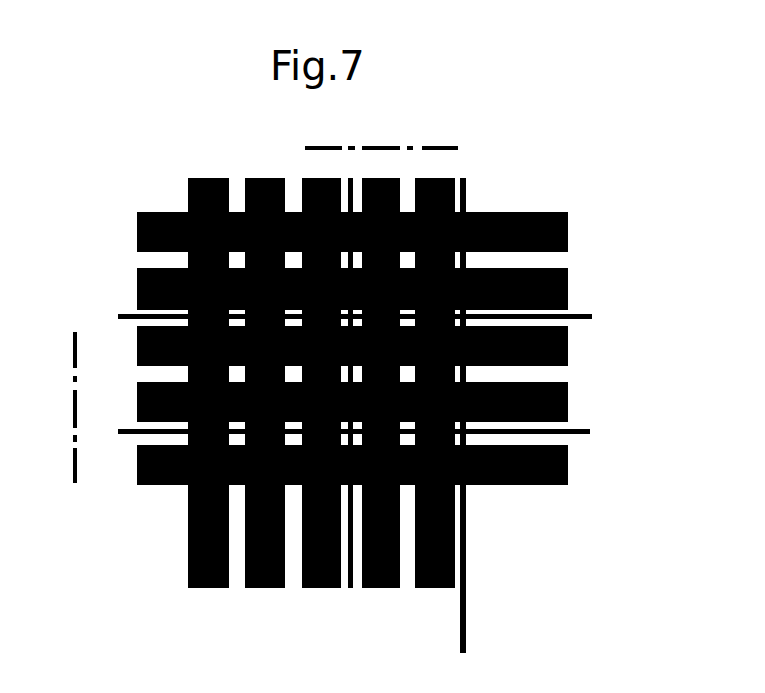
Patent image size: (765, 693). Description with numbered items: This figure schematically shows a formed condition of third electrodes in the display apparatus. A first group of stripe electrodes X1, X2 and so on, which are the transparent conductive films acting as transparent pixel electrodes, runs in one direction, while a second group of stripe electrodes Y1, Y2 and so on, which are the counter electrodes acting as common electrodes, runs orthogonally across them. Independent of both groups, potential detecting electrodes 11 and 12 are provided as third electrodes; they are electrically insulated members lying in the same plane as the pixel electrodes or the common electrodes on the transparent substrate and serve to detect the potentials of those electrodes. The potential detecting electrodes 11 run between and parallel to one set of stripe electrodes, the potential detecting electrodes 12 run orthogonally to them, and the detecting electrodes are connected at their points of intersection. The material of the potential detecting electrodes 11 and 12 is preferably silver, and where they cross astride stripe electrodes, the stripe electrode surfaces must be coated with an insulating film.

The potential detecting electrode 11 is at (571, 316).
The potential detecting electrode 12 is at (352, 565).
The first group of electrodes X1 is at (211, 358).
The first group of electrodes X2 is at (265, 358).
The second group of electrodes Y1 is at (320, 232).
The second group of electrodes Y2 is at (320, 289).